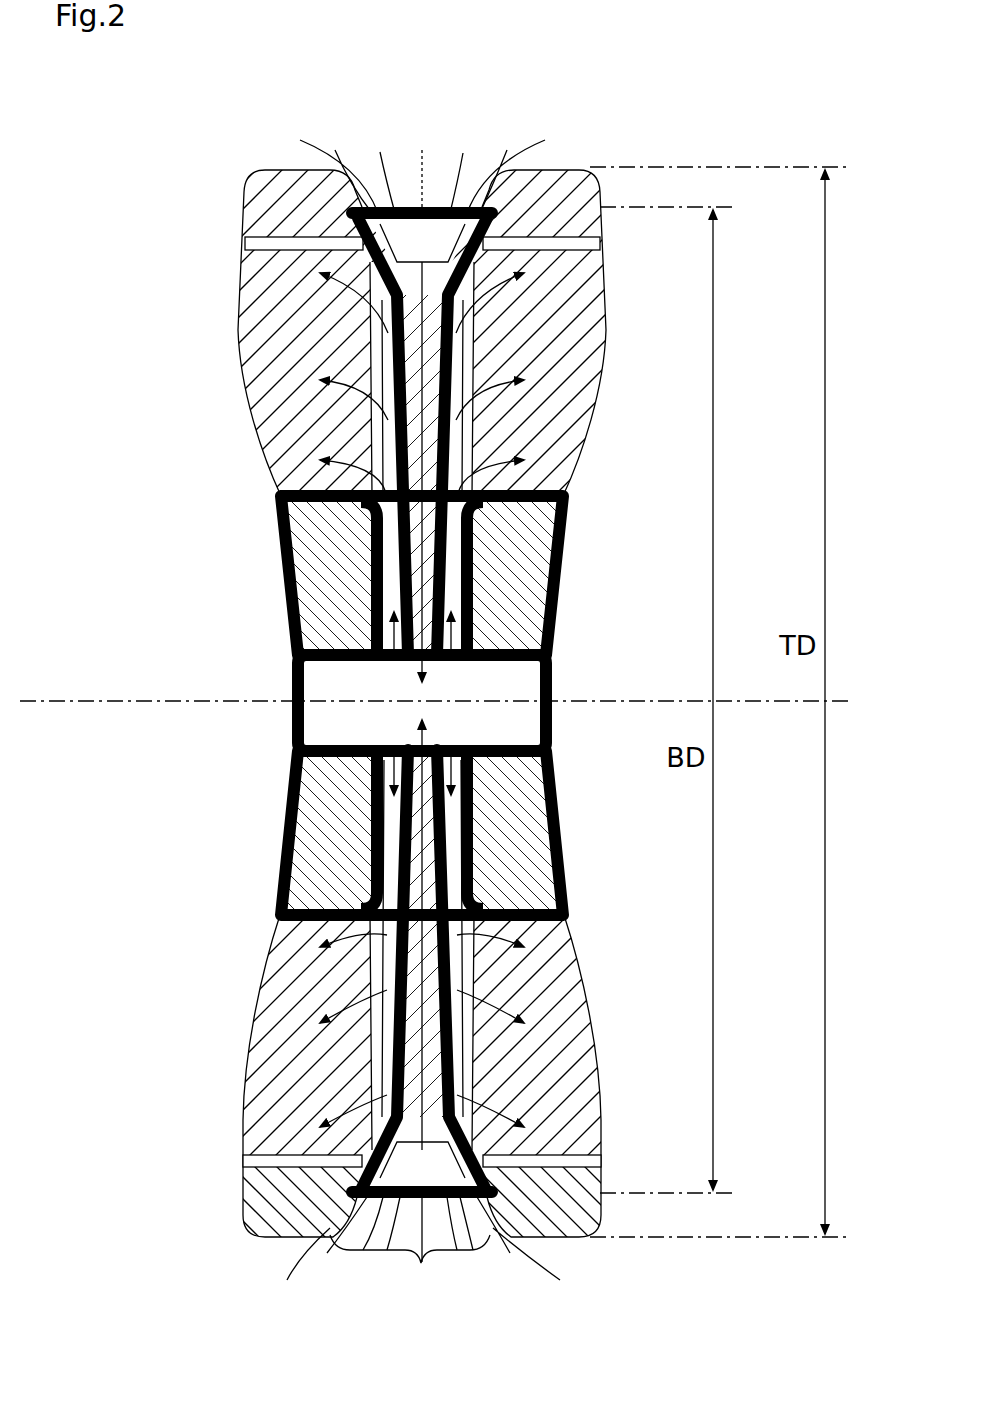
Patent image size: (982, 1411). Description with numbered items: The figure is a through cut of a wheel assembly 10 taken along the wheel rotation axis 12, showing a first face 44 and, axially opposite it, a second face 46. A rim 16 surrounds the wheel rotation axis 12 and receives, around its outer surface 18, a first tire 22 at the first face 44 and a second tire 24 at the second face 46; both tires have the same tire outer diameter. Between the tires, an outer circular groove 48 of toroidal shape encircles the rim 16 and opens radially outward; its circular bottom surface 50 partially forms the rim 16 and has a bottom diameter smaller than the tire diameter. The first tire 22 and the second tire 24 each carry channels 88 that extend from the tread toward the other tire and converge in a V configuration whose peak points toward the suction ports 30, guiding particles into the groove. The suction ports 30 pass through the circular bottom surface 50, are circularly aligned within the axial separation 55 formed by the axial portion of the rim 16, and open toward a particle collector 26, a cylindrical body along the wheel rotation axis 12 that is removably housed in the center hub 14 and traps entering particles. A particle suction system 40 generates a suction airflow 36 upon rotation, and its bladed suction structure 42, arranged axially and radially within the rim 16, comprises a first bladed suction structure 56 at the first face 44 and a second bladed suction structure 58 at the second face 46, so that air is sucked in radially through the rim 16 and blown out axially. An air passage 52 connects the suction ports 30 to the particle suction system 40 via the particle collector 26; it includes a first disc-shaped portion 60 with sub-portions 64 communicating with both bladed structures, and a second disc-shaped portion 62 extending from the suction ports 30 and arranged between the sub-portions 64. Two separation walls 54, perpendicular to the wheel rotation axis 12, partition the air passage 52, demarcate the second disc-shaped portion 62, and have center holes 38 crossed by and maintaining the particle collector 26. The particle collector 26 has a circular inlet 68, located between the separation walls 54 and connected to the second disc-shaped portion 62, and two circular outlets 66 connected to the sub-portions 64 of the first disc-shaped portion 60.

The wheel assembly 10 is at (178, 222).
The wheel rotation axis 12 is at (72, 700).
The center hub 14 is at (490, 605).
The rim 16 is at (252, 1168).
The outer surface 18 is at (278, 1170).
The first tire 22 is at (538, 1230).
The second tire 24 is at (278, 1205).
The particle collector 26 is at (482, 695).
The suction ports 30 is at (407, 254).
The suction airflow 36 is at (380, 213).
The center holes 38 is at (407, 660).
The particle suction system 40 is at (140, 520).
The bladed suction structure 42 is at (152, 928).
The first face 44 is at (602, 438).
The second face 46 is at (174, 440).
The outer circular groove 48 is at (421, 150).
The circular bottom surface 50 is at (470, 213).
The air passage 52 is at (536, 990).
The separation walls 54 is at (393, 320).
The axial separation 55 is at (410, 1269).
The first bladed suction structure 56 is at (520, 1077).
The second bladed suction structure 58 is at (293, 1077).
The first disc-shaped portion 60 is at (367, 997).
The second disc-shaped portion 62 is at (403, 853).
The sub-portions 64 is at (387, 943).
The circular outlets 66 is at (370, 613).
The circular inlet 68 is at (393, 783).
The channels 88 is at (362, 213).